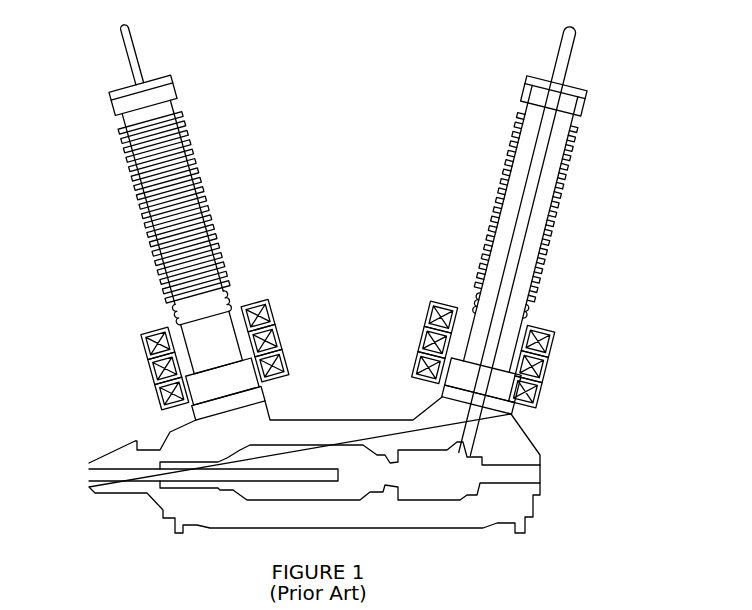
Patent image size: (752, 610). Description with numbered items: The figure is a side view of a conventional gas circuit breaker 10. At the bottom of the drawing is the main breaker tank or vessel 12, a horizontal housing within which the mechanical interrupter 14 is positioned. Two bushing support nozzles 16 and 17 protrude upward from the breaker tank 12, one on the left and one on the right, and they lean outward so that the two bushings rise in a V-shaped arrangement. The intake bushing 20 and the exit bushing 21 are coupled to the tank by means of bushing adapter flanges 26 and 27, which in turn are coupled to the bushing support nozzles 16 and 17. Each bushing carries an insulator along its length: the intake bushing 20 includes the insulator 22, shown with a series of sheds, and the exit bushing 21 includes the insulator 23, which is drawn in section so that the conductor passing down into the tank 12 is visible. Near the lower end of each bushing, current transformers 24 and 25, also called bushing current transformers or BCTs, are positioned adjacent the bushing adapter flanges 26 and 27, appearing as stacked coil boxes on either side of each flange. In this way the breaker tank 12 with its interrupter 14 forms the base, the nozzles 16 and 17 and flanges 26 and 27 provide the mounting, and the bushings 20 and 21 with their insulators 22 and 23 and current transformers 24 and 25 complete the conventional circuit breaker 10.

The gas circuit breaker 10 is at (367, 33).
The main breaker tank 12 is at (337, 418).
The mechanical interrupter 14 is at (353, 500).
The bushing support nozzle 16 is at (193, 410).
The bushing support nozzle 17 is at (503, 422).
The intake bushing 20 is at (174, 103).
The exit bushing 21 is at (520, 103).
The insulator 22 is at (138, 198).
The insulator 23 is at (563, 198).
The current transformer 24 is at (153, 333).
The current transformer 25 is at (557, 340).
The bushing adapter flange 26 is at (241, 372).
The bushing adapter flange 27 is at (458, 368).